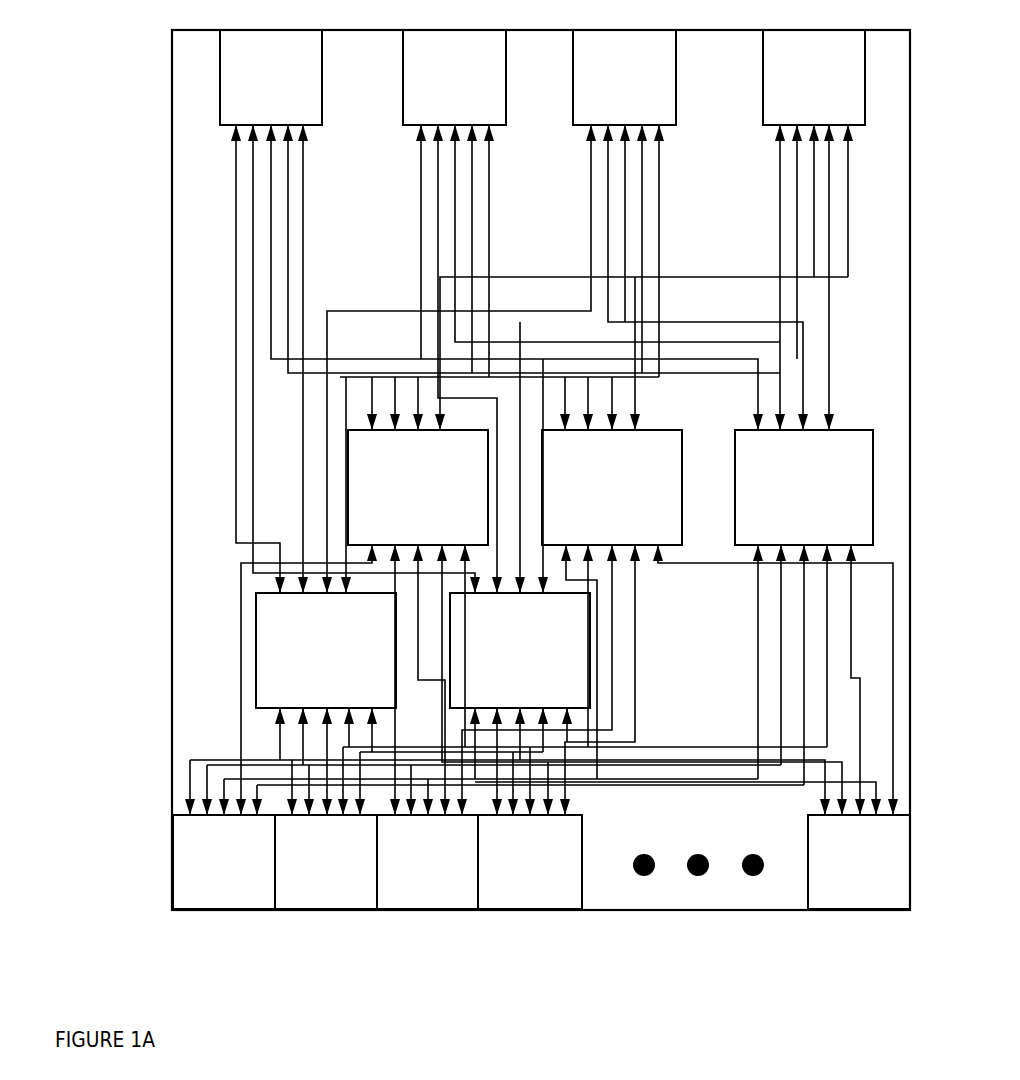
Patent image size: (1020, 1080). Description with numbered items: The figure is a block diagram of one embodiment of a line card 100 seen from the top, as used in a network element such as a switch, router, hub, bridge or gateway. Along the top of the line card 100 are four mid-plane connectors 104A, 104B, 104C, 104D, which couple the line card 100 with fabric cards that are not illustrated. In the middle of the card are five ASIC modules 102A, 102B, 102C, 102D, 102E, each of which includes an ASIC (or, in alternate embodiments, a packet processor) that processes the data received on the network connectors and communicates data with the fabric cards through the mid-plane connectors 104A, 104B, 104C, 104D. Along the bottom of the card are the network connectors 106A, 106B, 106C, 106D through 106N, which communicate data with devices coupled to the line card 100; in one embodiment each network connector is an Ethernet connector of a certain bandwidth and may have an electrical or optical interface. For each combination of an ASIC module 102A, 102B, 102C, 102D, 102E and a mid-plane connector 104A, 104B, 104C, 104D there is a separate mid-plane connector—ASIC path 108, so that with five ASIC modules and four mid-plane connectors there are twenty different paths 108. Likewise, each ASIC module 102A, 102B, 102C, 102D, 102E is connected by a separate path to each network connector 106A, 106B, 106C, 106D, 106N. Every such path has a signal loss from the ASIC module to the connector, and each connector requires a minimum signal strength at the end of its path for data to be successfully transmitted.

The line card 100 is at (162, 467).
The ASIC module 102A is at (418, 487).
The ASIC module 102B is at (612, 487).
The ASIC module 102C is at (804, 487).
The ASIC module 102D is at (326, 650).
The ASIC module 102E is at (520, 650).
The mid-plane connector 104A is at (271, 77).
The mid-plane connector 104B is at (454, 77).
The mid-plane connector 104C is at (624, 77).
The mid-plane connector 104D is at (814, 77).
The network connector 106A is at (224, 862).
The network connector 106B is at (326, 862).
The network connector 106C is at (427, 862).
The network connector 106D is at (530, 862).
The network connector 106N is at (859, 862).
The mid-plane connector—ASIC path 108 is at (246, 243).